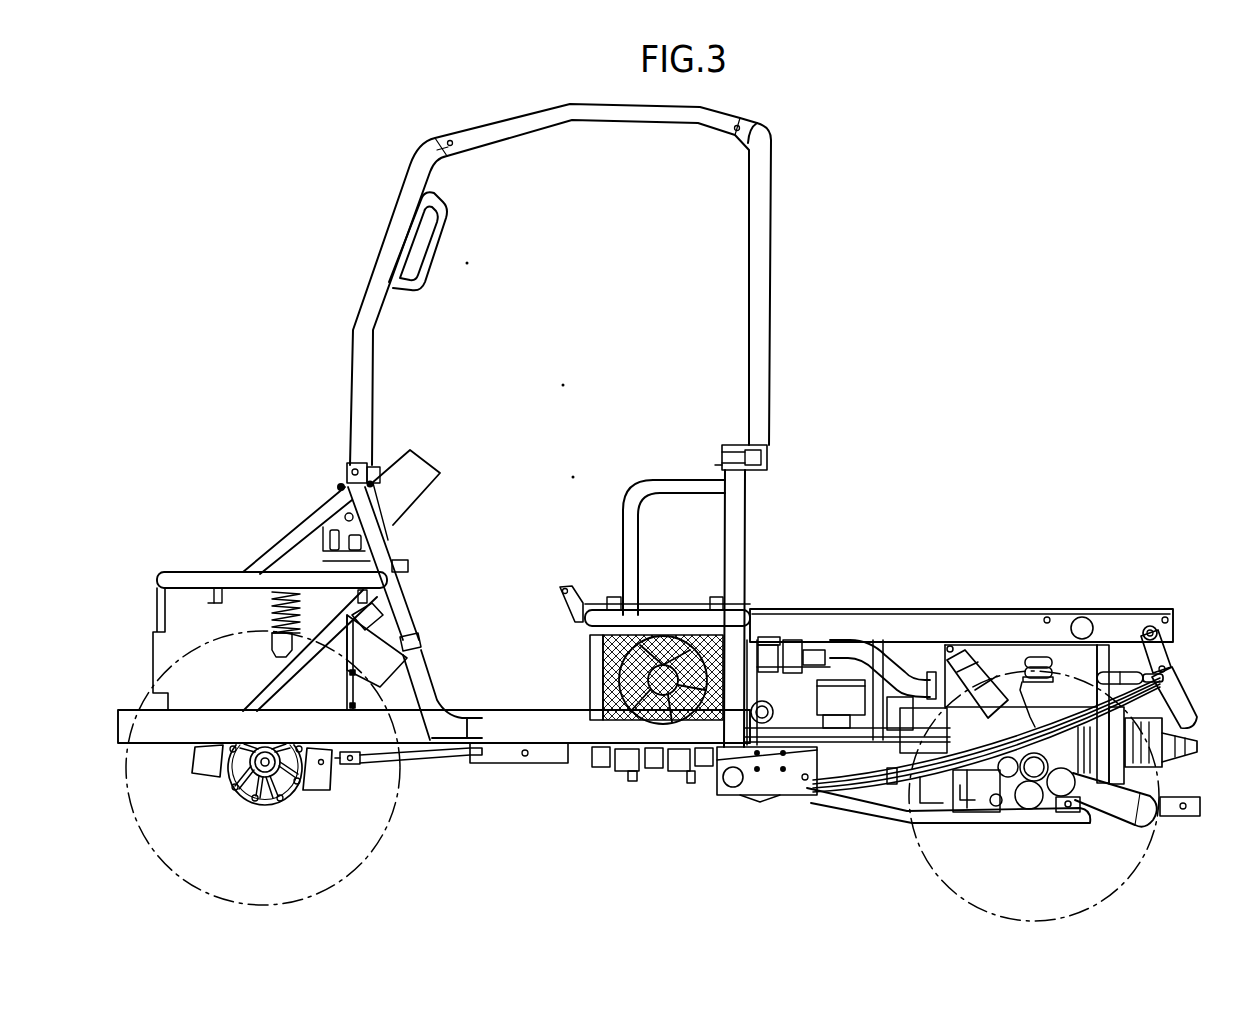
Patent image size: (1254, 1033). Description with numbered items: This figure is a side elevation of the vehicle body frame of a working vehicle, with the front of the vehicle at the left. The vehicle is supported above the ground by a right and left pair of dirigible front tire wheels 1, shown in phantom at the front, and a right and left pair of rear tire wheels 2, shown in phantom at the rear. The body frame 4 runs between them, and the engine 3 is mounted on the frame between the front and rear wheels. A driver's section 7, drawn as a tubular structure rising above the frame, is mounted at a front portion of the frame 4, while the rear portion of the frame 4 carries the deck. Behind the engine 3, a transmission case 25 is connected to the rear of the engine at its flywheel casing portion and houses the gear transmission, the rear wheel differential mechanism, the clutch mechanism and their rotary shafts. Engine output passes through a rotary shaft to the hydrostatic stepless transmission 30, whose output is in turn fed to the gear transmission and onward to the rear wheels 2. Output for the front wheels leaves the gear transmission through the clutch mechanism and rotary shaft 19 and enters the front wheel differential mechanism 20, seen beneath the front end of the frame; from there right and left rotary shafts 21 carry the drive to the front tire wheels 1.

The front tire wheels 1 is at (148, 837).
The rear tire wheels 2 is at (1137, 862).
The engine 3 is at (800, 705).
The body frame 4 is at (883, 620).
The driver's section 7 is at (418, 360).
The rotary shaft 19 is at (422, 752).
The front wheel differential mechanism 20 is at (268, 806).
The rotary shafts 21 is at (267, 753).
The transmission case 25 is at (963, 782).
The hydrostatic stepless transmission 30 is at (1197, 738).